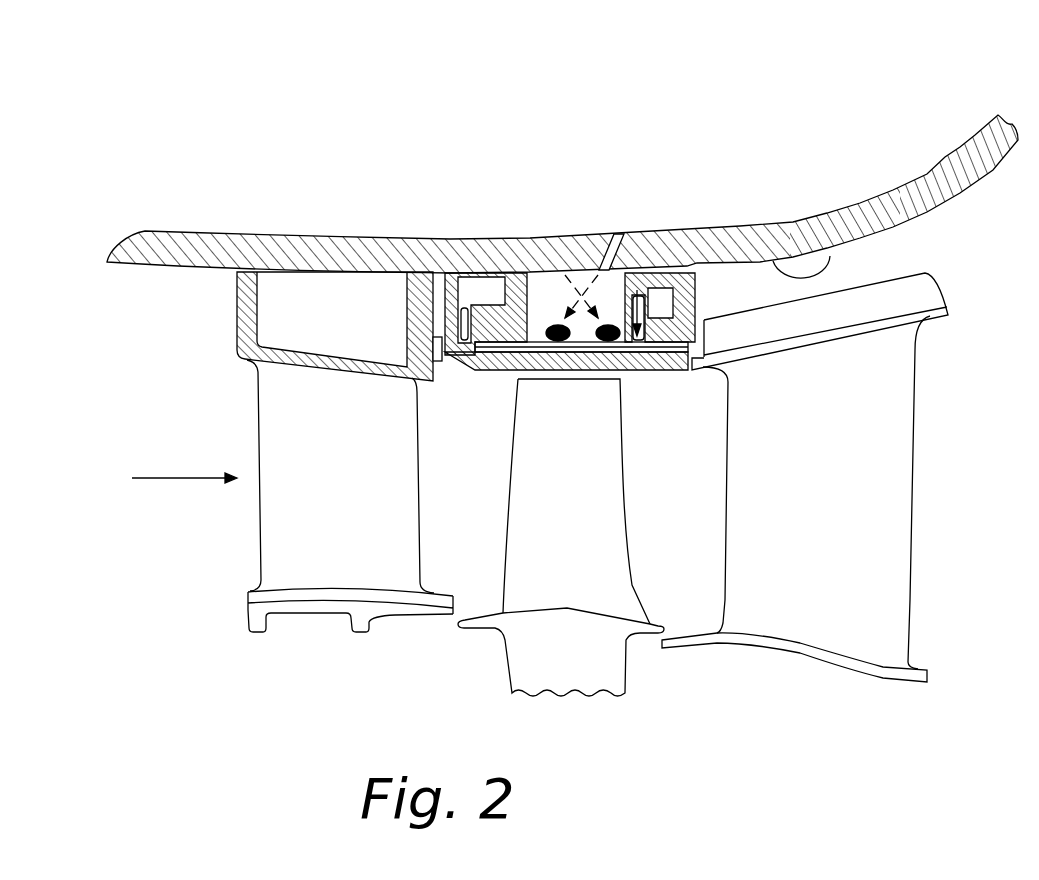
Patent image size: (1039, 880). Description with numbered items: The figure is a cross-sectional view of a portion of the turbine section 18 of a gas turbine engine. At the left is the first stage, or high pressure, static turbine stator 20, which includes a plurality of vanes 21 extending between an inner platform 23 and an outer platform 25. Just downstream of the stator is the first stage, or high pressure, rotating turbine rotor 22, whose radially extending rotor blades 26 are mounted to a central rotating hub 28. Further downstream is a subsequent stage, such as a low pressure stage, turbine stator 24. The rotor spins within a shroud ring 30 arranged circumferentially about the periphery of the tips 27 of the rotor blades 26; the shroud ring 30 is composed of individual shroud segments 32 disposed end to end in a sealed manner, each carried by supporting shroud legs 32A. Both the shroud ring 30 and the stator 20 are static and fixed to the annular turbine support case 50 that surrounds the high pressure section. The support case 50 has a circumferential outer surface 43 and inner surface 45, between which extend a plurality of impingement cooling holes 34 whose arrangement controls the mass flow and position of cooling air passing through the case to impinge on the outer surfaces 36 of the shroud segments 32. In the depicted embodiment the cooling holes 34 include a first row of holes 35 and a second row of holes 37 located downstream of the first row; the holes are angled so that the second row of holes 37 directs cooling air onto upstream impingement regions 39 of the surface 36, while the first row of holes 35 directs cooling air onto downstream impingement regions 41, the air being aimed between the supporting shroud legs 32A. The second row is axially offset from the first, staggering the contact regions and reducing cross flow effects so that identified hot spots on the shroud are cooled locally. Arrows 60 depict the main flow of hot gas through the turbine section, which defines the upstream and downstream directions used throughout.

The turbine section 18 is at (815, 162).
The turbine stator 20 is at (284, 270).
The vanes 21 is at (308, 533).
The turbine rotor 22 is at (520, 576).
The inner platform 23 is at (257, 617).
The turbine stator 24 is at (923, 418).
The outer platform 25 is at (247, 348).
The rotor blades 26 is at (582, 501).
The tips 27 is at (602, 393).
The central rotating hub 28 is at (592, 660).
The shroud ring 30 is at (677, 373).
The shroud segments 32 is at (663, 305).
The supporting shroud legs 32A is at (613, 265).
The impingement cooling holes 34 is at (607, 243).
The first row of holes 35 is at (515, 252).
The outer surfaces 36 is at (606, 342).
The second row of holes 37 is at (637, 290).
The upstream impingement regions 39 is at (558, 342).
The downstream impingement regions 41 is at (620, 366).
The outer surface 43 is at (562, 158).
The inner surface 45 is at (831, 262).
The turbine support case 50 is at (945, 157).
The arrows 60 is at (190, 477).